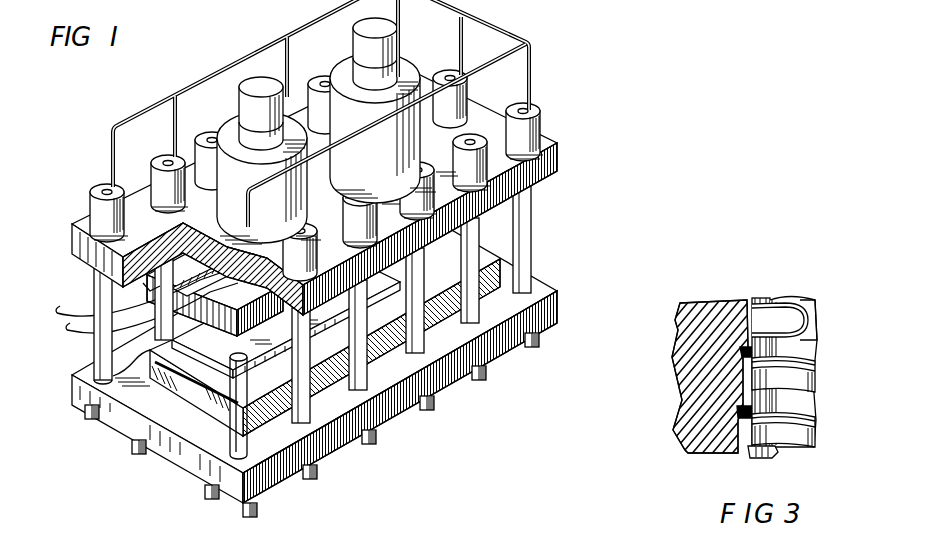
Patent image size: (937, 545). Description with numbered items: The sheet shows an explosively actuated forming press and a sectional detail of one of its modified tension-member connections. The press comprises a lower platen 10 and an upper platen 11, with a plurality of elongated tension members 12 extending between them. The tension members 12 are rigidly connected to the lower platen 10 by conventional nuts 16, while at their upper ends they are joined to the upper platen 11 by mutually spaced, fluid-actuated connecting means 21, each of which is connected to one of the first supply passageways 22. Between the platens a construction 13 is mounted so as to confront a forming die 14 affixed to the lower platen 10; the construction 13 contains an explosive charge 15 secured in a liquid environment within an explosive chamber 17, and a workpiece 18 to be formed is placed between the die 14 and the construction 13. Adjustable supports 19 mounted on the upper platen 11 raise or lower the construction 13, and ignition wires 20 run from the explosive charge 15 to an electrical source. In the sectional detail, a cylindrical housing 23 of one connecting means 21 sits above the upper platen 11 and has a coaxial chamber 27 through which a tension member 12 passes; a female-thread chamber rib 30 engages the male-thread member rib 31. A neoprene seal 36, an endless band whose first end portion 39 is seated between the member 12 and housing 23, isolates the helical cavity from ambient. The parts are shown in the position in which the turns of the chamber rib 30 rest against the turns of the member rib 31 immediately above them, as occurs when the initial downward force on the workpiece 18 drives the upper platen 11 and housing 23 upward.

In FIG. 1, the lower platen 10 is at (72, 385).
In FIG. 1, the upper platen 11 is at (72, 239).
In FIG. 1, the tension members 12 is at (533, 210).
In FIG. 3, the tension members 12 is at (786, 298).
In FIG. 1, the construction 13 is at (133, 288).
In FIG. 1, the forming die 14 is at (195, 403).
In FIG. 1, the explosive charge 15 is at (157, 262).
In FIG. 1, the nuts 16 is at (367, 440).
In FIG. 1, the explosive chamber 17 is at (200, 293).
In FIG. 1, the workpiece 18 is at (273, 358).
In FIG. 1, the adjustable supports 19 is at (417, 54).
In FIG. 1, the ignition wires 20 is at (85, 335).
In FIG. 1, the connecting means 21 is at (555, 116).
In FIG. 1, the first supply passageways 22 is at (531, 67).
In FIG. 3, the cylindrical housing 23 is at (708, 300).
In FIG. 3, the chamber 27 is at (771, 298).
In FIG. 3, the chamber rib 30 is at (753, 455).
In FIG. 3, the member rib 31 is at (812, 424).
In FIG. 3, the seal 36 is at (816, 313).
In FIG. 3, the seal first end portion 39 is at (806, 300).